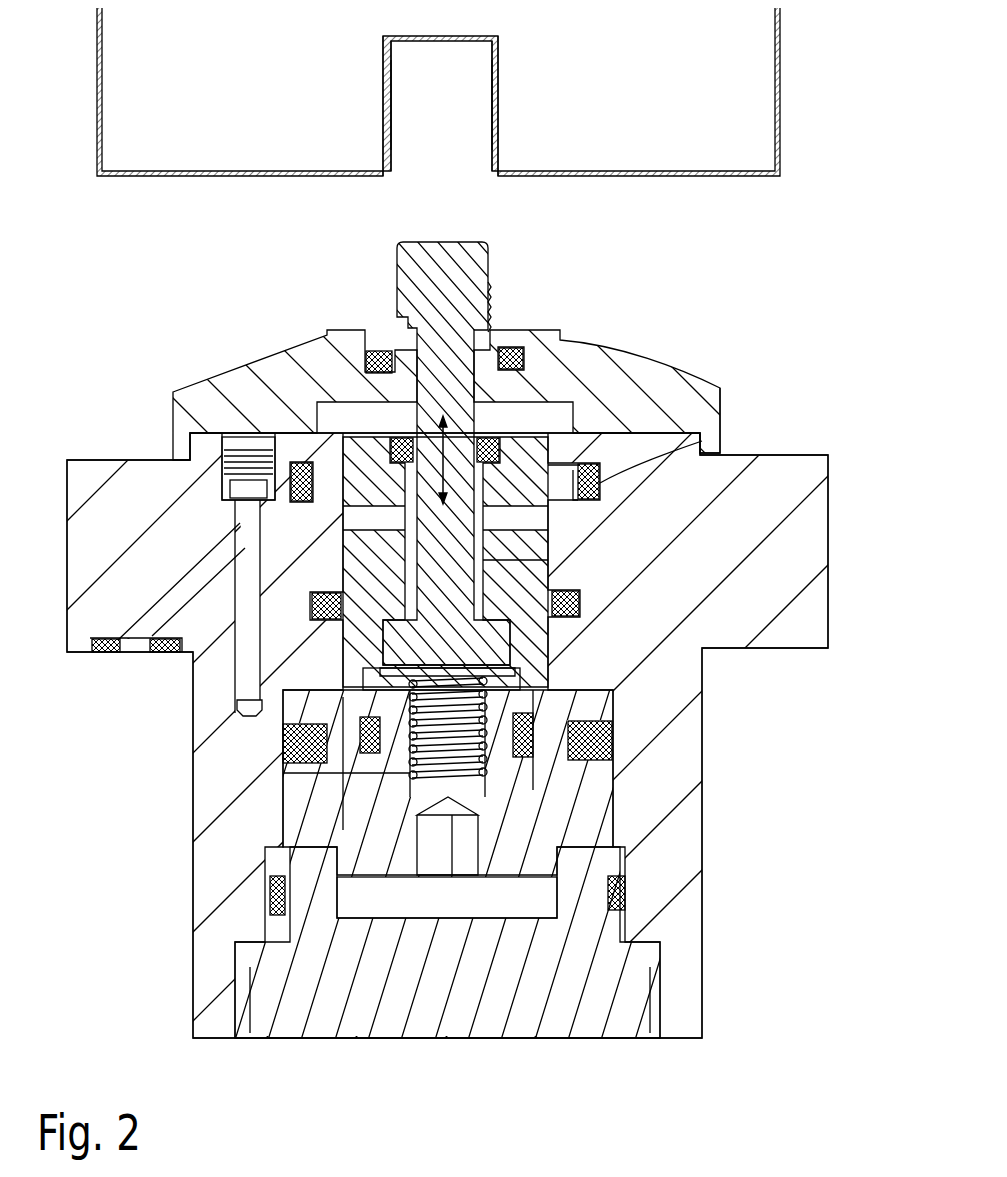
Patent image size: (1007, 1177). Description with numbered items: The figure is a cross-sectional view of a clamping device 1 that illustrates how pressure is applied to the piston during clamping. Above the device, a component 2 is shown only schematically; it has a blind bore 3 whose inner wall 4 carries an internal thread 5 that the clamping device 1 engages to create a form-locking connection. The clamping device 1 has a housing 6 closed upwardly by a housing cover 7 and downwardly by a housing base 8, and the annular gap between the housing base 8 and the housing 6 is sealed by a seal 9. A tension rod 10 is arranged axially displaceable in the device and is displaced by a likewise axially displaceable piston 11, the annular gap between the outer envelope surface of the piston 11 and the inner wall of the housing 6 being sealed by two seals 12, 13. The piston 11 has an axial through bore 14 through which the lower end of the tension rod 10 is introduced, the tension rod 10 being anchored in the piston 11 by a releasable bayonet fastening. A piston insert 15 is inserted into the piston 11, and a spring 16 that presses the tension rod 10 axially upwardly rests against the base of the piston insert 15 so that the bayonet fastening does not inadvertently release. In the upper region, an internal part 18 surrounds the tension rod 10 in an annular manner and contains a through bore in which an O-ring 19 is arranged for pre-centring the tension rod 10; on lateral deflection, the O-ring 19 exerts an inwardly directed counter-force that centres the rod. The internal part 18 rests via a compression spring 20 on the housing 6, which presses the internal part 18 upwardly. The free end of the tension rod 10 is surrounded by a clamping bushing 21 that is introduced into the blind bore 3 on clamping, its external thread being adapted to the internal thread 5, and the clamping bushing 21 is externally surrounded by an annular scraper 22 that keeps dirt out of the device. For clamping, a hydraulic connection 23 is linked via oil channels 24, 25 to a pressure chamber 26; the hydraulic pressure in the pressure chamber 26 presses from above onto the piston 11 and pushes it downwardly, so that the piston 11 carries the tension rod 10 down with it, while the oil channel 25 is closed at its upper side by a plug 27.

The clamping device 1 is at (241, 300).
The component 2 is at (692, 188).
The blind bore 3 is at (415, 106).
The inner wall 4 is at (490, 68).
The internal thread 5 is at (497, 118).
The housing 6 is at (90, 478).
The housing cover 7 is at (705, 412).
The housing base 8 is at (421, 1014).
The seal 9 is at (626, 888).
The tension rod 10 is at (438, 258).
The piston 11 is at (582, 776).
The seal 12 is at (577, 604).
The seal 13 is at (602, 740).
The axial through bore 14 is at (500, 563).
The piston insert 15 is at (510, 862).
The spring 16 is at (335, 776).
The internal part 18 is at (590, 455).
The O-ring 19 is at (400, 436).
The compression spring 20 is at (708, 446).
The clamping bushing 21 is at (494, 290).
The scraper 22 is at (372, 352).
The hydraulic connection 23 is at (128, 654).
The oil channel 24 is at (152, 619).
The oil channel 25 is at (245, 592).
The pressure chamber 26 is at (245, 714).
The plug 27 is at (248, 443).